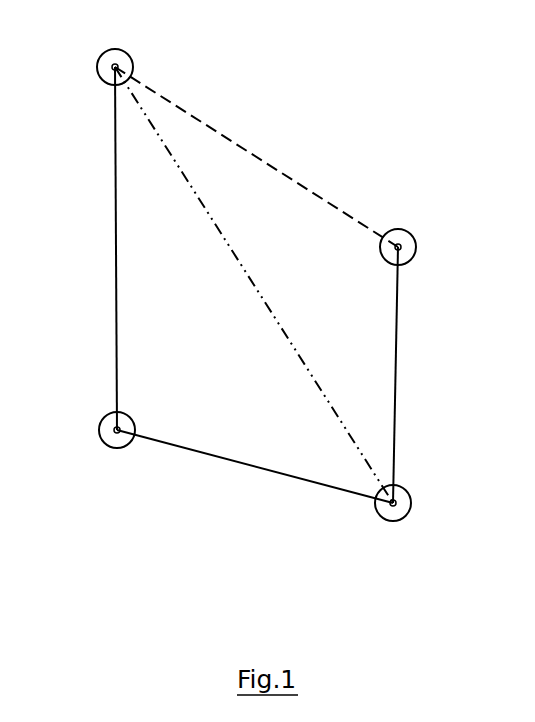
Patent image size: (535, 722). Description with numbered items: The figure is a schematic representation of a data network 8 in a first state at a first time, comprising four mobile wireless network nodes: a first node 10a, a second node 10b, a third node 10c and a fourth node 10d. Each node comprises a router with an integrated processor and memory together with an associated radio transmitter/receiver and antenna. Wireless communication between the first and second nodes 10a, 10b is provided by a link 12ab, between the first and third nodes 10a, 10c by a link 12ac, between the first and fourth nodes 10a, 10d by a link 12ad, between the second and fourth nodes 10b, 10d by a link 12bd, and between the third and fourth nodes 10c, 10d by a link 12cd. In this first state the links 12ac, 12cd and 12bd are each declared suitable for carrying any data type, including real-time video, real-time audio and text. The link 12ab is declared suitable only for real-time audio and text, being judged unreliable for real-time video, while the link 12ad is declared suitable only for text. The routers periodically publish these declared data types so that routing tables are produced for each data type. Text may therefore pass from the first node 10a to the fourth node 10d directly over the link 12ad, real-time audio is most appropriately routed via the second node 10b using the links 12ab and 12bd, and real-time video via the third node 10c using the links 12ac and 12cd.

The data network 8 is at (345, 133).
The first node 10a is at (130, 60).
The second node 10b is at (413, 242).
The third node 10c is at (105, 435).
The fourth node 10d is at (410, 498).
The link 12ab is at (220, 128).
The link 12ac is at (114, 235).
The link 12ad is at (268, 308).
The link 12bd is at (397, 418).
The link 12cd is at (192, 448).